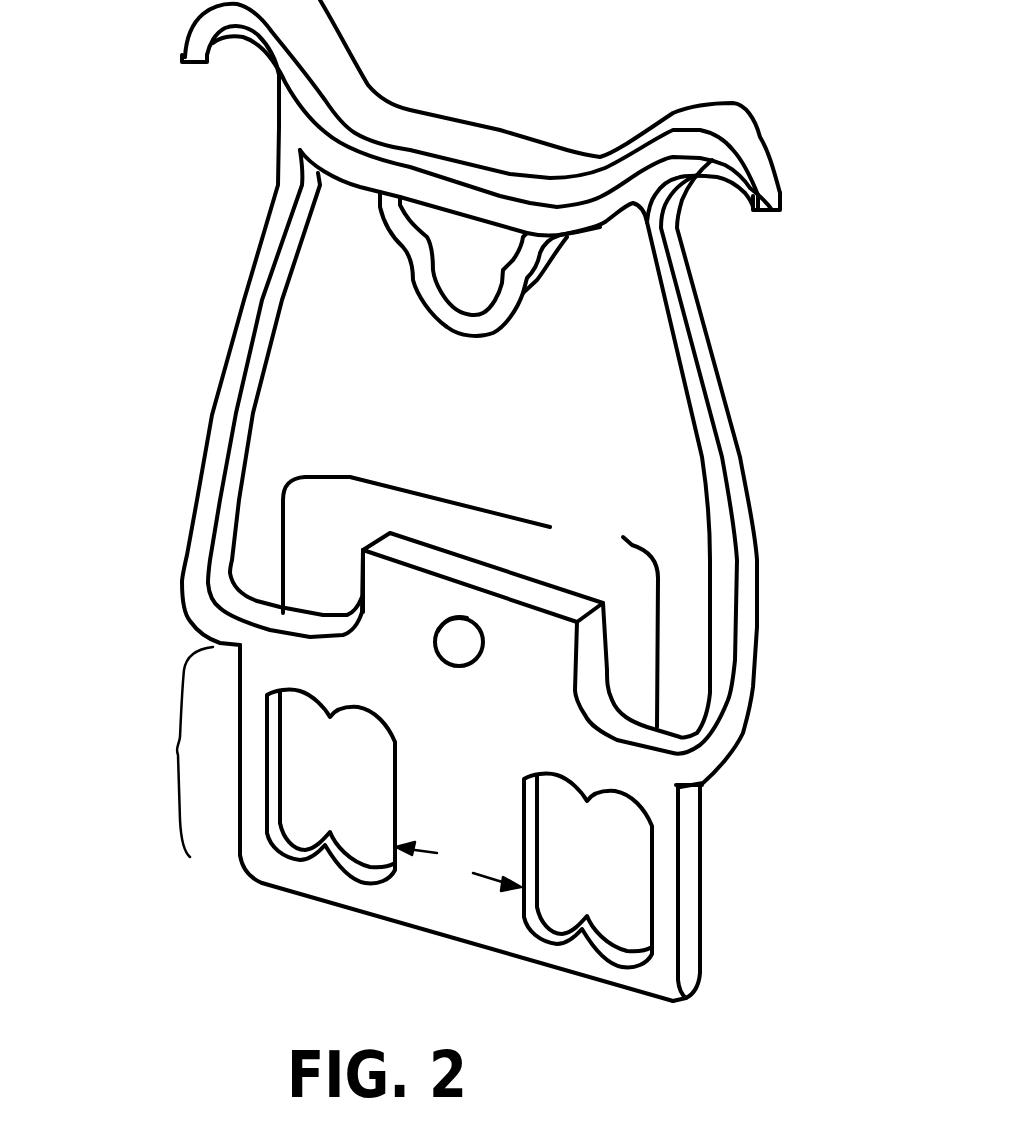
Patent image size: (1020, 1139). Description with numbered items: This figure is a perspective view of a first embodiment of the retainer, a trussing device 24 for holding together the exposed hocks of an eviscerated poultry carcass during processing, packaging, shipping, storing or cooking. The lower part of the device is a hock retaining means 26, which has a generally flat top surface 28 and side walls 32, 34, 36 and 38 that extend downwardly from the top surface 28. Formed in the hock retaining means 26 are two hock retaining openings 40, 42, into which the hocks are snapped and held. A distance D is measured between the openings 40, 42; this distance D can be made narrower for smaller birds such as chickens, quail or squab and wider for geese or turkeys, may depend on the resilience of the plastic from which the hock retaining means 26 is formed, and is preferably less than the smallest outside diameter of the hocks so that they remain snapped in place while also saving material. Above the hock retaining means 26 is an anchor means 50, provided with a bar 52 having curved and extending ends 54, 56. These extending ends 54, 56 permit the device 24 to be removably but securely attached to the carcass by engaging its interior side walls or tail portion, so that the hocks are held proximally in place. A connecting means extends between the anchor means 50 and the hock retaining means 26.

The trussing device 24 is at (210, 429).
The hock retaining means 26 is at (156, 752).
The top surface 28 is at (430, 772).
The side wall 32 is at (690, 924).
The side wall 34 is at (236, 824).
The side wall 36 is at (485, 952).
The side wall 38 is at (470, 602).
The hock retaining opening 40 is at (273, 843).
The hock retaining opening 42 is at (600, 962).
The anchor means 50 is at (750, 105).
The bar 52 is at (473, 140).
The extending end 54 is at (197, 62).
The extending end 56 is at (766, 210).
The distance D is at (458, 865).